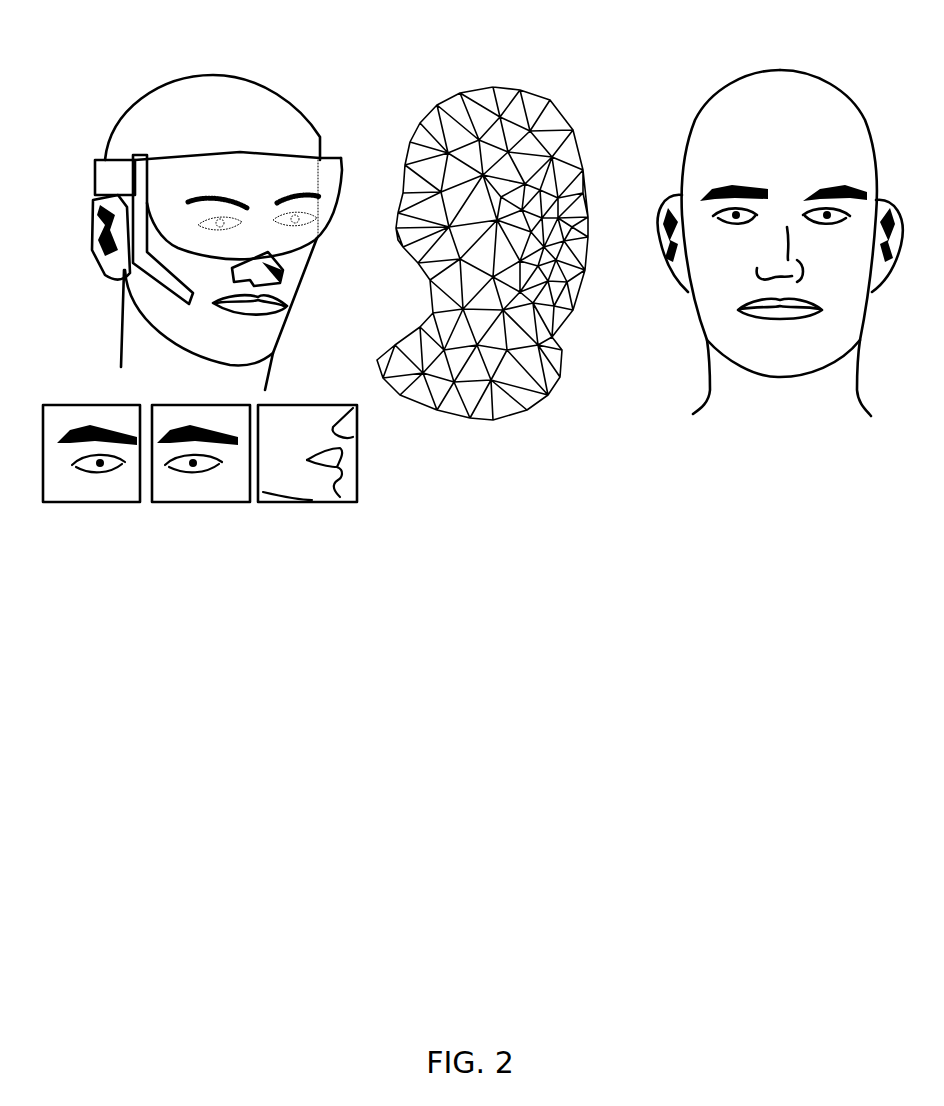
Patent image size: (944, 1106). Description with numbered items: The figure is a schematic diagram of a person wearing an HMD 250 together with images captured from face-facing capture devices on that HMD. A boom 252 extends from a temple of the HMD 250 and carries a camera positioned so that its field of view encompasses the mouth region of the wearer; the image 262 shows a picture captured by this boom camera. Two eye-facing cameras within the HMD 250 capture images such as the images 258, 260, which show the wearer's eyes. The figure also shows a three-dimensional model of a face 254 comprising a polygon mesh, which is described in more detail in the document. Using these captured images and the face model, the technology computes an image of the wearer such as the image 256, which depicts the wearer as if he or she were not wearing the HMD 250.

The HMD 250 is at (266, 187).
The boom 252 is at (176, 288).
The 3D model of a face 254 is at (505, 97).
The image 256 is at (788, 100).
The image 258 is at (103, 503).
The image 260 is at (208, 503).
The image 262 is at (313, 503).